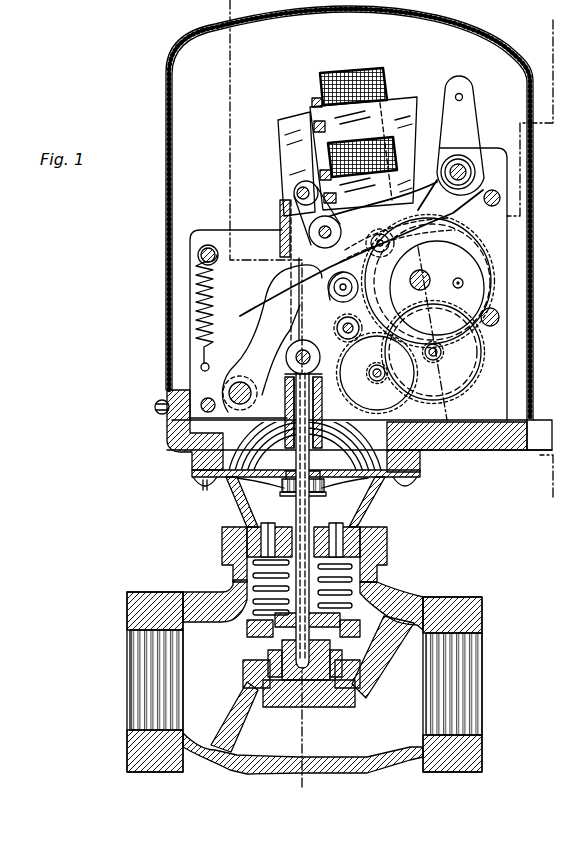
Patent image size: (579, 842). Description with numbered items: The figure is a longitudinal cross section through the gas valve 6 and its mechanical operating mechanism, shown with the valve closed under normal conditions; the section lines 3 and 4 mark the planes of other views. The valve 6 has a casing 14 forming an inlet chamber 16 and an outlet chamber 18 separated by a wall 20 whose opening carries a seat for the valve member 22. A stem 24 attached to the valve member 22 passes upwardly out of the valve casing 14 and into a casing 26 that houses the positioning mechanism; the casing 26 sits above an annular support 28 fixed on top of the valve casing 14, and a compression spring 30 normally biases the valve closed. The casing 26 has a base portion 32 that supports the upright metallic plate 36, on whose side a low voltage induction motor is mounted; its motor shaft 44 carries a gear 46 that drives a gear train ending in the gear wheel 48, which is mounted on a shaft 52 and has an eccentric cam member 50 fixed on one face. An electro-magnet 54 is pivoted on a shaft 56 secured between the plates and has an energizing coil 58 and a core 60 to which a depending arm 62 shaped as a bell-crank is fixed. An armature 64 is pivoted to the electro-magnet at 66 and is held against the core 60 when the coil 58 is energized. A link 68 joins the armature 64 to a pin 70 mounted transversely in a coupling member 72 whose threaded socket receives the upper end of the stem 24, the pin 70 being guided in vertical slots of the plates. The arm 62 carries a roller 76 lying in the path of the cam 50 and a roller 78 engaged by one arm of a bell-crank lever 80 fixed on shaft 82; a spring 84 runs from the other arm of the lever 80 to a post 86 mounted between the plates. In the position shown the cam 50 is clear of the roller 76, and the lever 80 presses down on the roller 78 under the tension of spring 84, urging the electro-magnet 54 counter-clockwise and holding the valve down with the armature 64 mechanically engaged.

The section line 3- 3 is at (236, 12).
The section line 4- 4 is at (578, 27).
The valve 6 is at (212, 585).
The valve casing 14 is at (396, 612).
The inlet chamber 16 is at (402, 730).
The outlet chamber 18 is at (193, 673).
The wall 20 is at (363, 678).
The valve member 22 is at (357, 671).
The stem 24 is at (353, 528).
The casing 26 is at (542, 357).
The annular support 28 is at (228, 496).
The compression spring 30 is at (257, 568).
The base portion 32 is at (487, 452).
The metallic plate 36 is at (500, 175).
The motor shaft 44 is at (338, 324).
The gear 46 is at (336, 337).
The gear wheel 48 is at (440, 262).
The cam member 50 is at (462, 283).
The shaft 52 is at (428, 275).
The electro-magnet 54 is at (433, 83).
The shaft 56 is at (466, 160).
The energizing coil 58 is at (352, 70).
The core 60 is at (392, 118).
The depending arm 62 is at (495, 203).
The armature 64 is at (287, 114).
The pivot 66 is at (320, 229).
The link 68 is at (282, 230).
The pin 70 is at (297, 354).
The coupling member 72 is at (292, 380).
The roller 76 is at (394, 233).
The roller 78 is at (361, 265).
The bell-crank lever 80 is at (288, 268).
The shaft 82 is at (228, 392).
The spring 84 is at (197, 321).
The post 86 is at (200, 255).